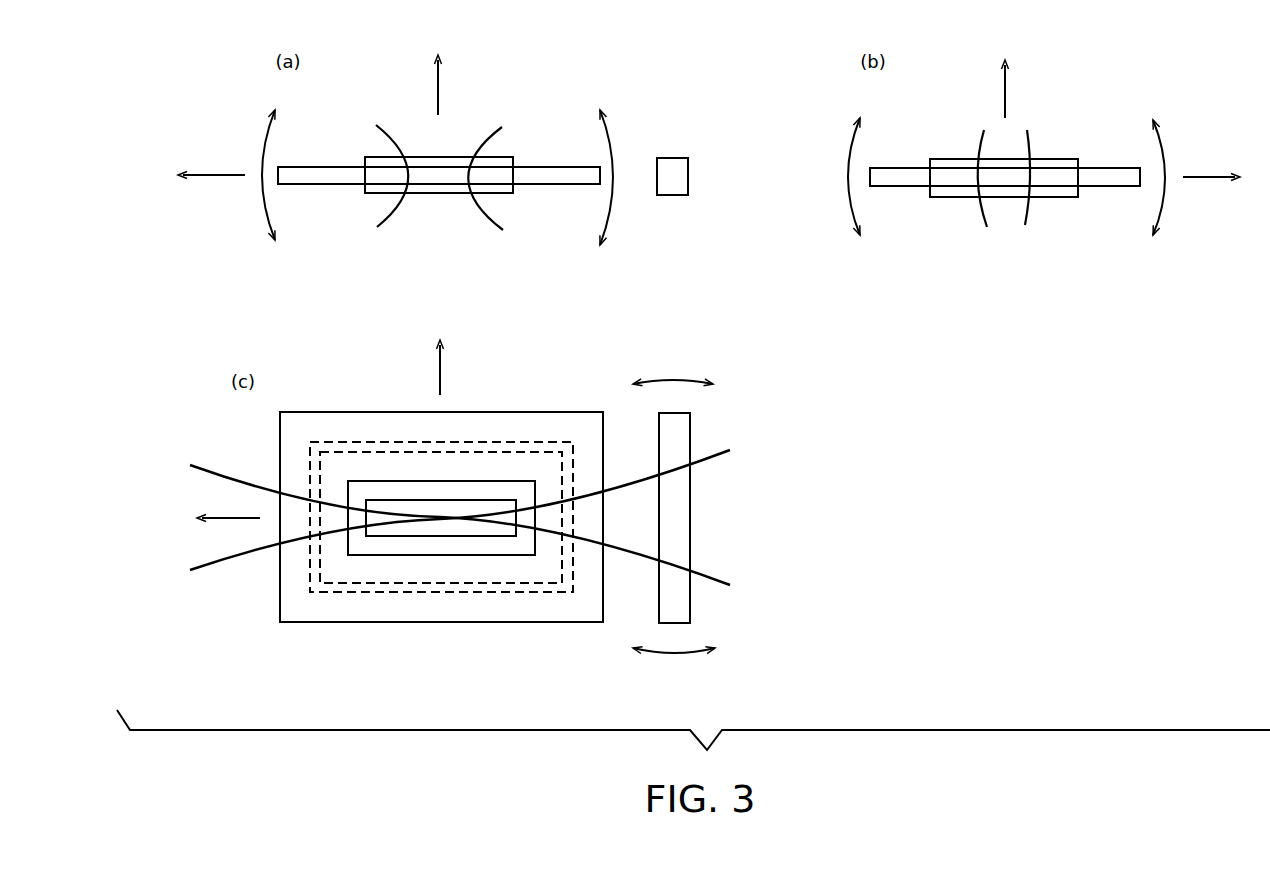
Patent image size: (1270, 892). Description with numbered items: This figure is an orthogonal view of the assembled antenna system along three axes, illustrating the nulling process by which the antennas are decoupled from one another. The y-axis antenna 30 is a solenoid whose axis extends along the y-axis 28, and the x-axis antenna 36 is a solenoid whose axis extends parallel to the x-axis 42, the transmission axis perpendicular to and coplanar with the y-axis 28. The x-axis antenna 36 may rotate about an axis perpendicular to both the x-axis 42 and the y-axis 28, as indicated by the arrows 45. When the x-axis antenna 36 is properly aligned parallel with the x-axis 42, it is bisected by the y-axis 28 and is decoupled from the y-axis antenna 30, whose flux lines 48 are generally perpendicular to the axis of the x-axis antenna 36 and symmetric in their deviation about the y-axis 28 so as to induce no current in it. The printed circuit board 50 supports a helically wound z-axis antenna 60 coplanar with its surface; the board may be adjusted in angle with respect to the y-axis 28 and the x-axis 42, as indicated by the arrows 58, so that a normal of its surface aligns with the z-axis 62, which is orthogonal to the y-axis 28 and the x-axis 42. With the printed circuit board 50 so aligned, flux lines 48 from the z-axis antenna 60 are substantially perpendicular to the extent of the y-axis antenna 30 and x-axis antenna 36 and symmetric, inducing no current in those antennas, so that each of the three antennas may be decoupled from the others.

The y-axis 28 is at (228, 177).
The y-axis antenna 30 is at (503, 157).
The x-axis antenna 36 is at (690, 165).
The x-axis 42 is at (1203, 177).
The arrows 45 is at (673, 380).
The flux lines 48 is at (392, 215).
The printed circuit board 50 is at (282, 589).
The arrows 58 is at (266, 140).
The z-axis antenna 60 is at (323, 166).
The z-axis 62 is at (438, 90).